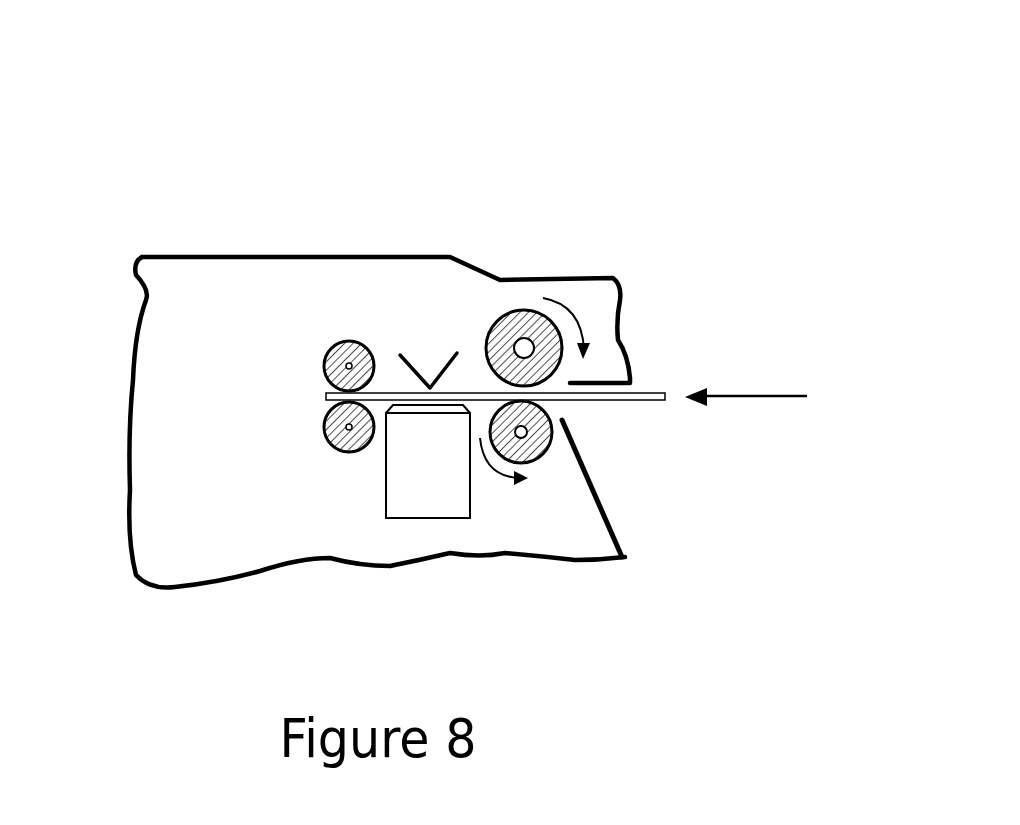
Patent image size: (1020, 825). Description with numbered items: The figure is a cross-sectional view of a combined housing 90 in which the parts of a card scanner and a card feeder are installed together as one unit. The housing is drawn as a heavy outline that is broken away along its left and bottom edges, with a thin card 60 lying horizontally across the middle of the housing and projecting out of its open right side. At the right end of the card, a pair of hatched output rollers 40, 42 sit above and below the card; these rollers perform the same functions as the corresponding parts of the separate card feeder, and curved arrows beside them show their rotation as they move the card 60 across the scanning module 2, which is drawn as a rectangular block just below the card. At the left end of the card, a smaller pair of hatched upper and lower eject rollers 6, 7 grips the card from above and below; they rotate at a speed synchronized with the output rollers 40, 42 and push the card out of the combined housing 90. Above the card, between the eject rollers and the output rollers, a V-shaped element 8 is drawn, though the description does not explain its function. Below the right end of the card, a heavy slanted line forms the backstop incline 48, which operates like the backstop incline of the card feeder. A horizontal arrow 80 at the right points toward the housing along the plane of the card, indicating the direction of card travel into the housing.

The combined housing 90 is at (365, 243).
The card 60 is at (648, 390).
The output roller 40 is at (514, 308).
The output roller 42 is at (546, 455).
The upper eject roller 6 is at (322, 371).
The lower eject roller 7 is at (323, 444).
The guide member 8 is at (414, 370).
The scanning module 2 is at (413, 503).
The backstop incline 48 is at (614, 504).
The feed direction arrow 80 is at (766, 399).